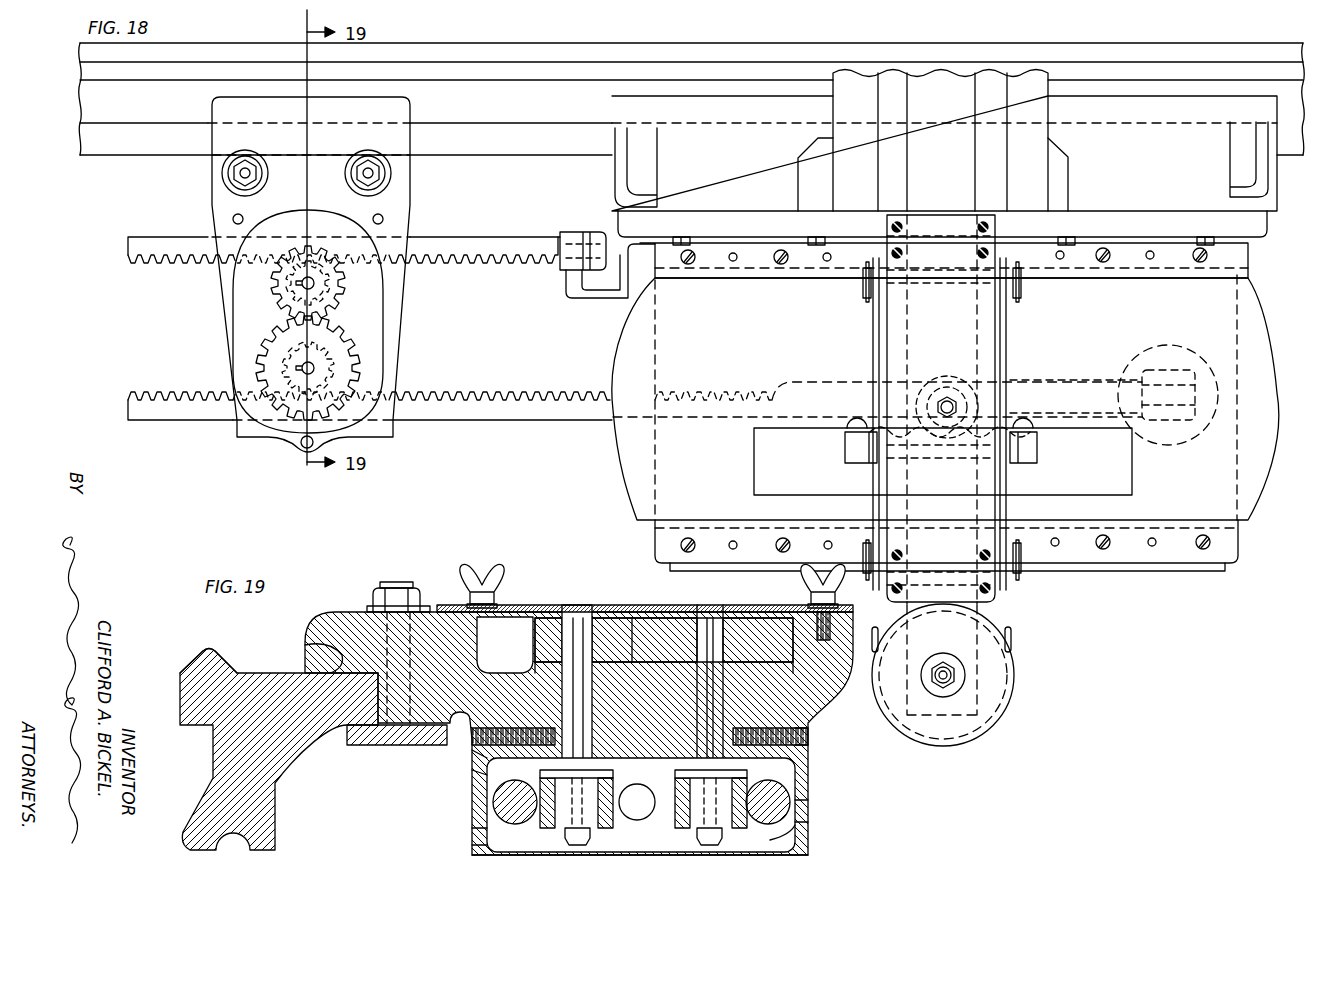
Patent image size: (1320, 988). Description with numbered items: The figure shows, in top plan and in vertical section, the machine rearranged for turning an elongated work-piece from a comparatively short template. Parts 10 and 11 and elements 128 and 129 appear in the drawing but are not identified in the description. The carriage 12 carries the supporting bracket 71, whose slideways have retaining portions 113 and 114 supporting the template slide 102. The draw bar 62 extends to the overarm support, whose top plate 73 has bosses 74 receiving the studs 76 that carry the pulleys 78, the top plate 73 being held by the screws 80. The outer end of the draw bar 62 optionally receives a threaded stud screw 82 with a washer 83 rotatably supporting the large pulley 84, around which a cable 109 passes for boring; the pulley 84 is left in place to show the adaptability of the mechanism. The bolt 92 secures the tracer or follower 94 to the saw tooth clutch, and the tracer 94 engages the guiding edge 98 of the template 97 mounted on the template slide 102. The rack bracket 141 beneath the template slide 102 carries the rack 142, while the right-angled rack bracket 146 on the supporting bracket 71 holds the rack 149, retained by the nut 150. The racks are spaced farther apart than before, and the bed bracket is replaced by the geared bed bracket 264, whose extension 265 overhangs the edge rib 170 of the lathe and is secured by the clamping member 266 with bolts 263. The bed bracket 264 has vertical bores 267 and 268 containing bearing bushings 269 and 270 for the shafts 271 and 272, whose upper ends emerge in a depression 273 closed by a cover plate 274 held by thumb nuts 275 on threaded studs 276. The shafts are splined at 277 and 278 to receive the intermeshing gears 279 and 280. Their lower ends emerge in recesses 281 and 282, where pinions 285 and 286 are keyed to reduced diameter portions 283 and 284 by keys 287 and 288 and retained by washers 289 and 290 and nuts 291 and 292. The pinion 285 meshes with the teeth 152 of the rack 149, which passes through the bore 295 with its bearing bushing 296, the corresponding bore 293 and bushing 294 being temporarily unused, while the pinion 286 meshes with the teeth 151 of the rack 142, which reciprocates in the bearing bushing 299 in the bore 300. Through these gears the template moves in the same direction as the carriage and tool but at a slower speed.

In FIG. 18, the rail base 10 is at (80, 100).
In FIG. 19, the rail base 10 is at (282, 764).
In FIG. 18, the rail 11 is at (498, 48).
In FIG. 19, the rail 11 is at (182, 662).
In FIG. 18, the carriage 12 is at (612, 166).
In FIG. 18, the draw bar 62 is at (980, 606).
In FIG. 18, the supporting bracket 71 is at (1157, 570).
In FIG. 18, the top plate 73 is at (893, 341).
In FIG. 18, the bosses 74 is at (1015, 580).
In FIG. 18, the studs 76 is at (1022, 283).
In FIG. 18, the pulleys 78 is at (1022, 588).
In FIG. 18, the screws 80 is at (983, 585).
In FIG. 18, the threaded stud screw 82 is at (958, 678).
In FIG. 18, the washer 83 is at (965, 668).
In FIG. 18, the large pulley 84 is at (995, 703).
In FIG. 18, the bolt 92 is at (947, 392).
In FIG. 18, the tracer or follower 94 is at (947, 455).
In FIG. 18, the template 97 is at (1037, 452).
In FIG. 18, the guiding edge 98 is at (1022, 433).
In FIG. 18, the template slide 102 is at (618, 457).
In FIG. 18, the cable 109 is at (1010, 640).
In FIG. 18, the retaining portion 113 is at (719, 265).
In FIG. 18, the retaining portion 114 is at (1186, 557).
In FIG. 18, the hole 128 is at (782, 265).
In FIG. 18, the screw 129 is at (1203, 534).
In FIG. 18, the rack bracket 141 is at (1165, 346).
In FIG. 18, the rack 142 is at (808, 778).
In FIG. 19, the rack 142 is at (808, 778).
In FIG. 18, the rack bracket 146 is at (583, 297).
In FIG. 18, the rack 149 is at (128, 250).
In FIG. 19, the rack 149 is at (487, 808).
In FIG. 18, the nut 150 is at (593, 230).
In FIG. 18, the teeth 151 is at (178, 392).
In FIG. 18, the teeth 152 is at (167, 264).
In FIG. 18, the edge rib 170 is at (103, 152).
In FIG. 19, the edge rib 170 is at (330, 646).
In FIG. 18, the bolts 263 is at (370, 162).
In FIG. 19, the bolts 263 is at (397, 582).
In FIG. 18, the geared bed bracket 264 is at (411, 191).
In FIG. 19, the geared bed bracket 264 is at (830, 690).
In FIG. 18, the extension 265 is at (215, 106).
In FIG. 19, the extension 265 is at (345, 610).
In FIG. 19, the clamping member 266 is at (368, 746).
In FIG. 19, the vertical bore 267 is at (470, 750).
In FIG. 19, the vertical bore 268 is at (808, 735).
In FIG. 19, the bearing bushing 269 is at (480, 780).
In FIG. 19, the bearing bushing 270 is at (808, 750).
In FIG. 19, the shaft 271 is at (580, 617).
In FIG. 19, the shaft 272 is at (703, 618).
In FIG. 19, the depression 273 is at (507, 628).
In FIG. 19, the cover plate 274 is at (600, 607).
In FIG. 19, the thumb nuts 275 is at (808, 585).
In FIG. 18, the threaded studs 276 is at (302, 447).
In FIG. 19, the threaded studs 276 is at (481, 578).
In FIG. 18, the spline 277 is at (300, 286).
In FIG. 18, the spline 278 is at (300, 368).
In FIG. 18, the gear 279 is at (350, 292).
In FIG. 19, the gear 279 is at (545, 617).
In FIG. 18, the gear 280 is at (358, 368).
In FIG. 19, the gear 280 is at (645, 618).
In FIG. 19, the recess 281 is at (486, 828).
In FIG. 19, the recess 282 is at (808, 842).
In FIG. 19, the reduced diameter portion 283 is at (575, 846).
In FIG. 19, the reduced diameter portion 284 is at (742, 838).
In FIG. 18, the pinion 285 is at (335, 300).
In FIG. 19, the pinion 285 is at (512, 852).
In FIG. 18, the pinion 286 is at (338, 373).
In FIG. 19, the pinion 286 is at (790, 845).
In FIG. 19, the key 287 is at (547, 830).
In FIG. 19, the key 288 is at (772, 826).
In FIG. 19, the washer 289 is at (604, 830).
In FIG. 19, the washer 290 is at (690, 830).
In FIG. 19, the nut 291 is at (587, 846).
In FIG. 19, the nut 292 is at (712, 846).
In FIG. 19, the bore 293 is at (640, 822).
In FIG. 19, the bearing bushing 294 is at (640, 846).
In FIG. 19, the bore 295 is at (480, 846).
In FIG. 19, the bearing bushing 296 is at (476, 855).
In FIG. 19, the bearing bushing 299 is at (808, 800).
In FIG. 19, the bore 300 is at (808, 822).